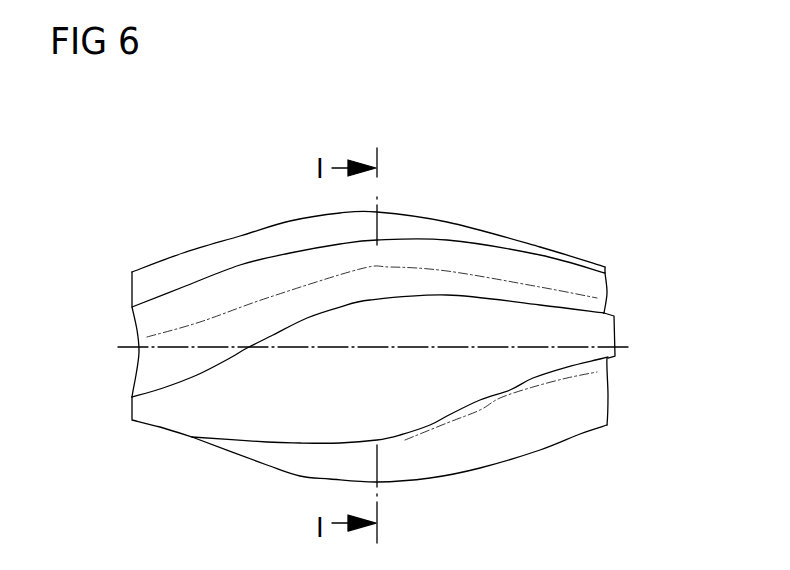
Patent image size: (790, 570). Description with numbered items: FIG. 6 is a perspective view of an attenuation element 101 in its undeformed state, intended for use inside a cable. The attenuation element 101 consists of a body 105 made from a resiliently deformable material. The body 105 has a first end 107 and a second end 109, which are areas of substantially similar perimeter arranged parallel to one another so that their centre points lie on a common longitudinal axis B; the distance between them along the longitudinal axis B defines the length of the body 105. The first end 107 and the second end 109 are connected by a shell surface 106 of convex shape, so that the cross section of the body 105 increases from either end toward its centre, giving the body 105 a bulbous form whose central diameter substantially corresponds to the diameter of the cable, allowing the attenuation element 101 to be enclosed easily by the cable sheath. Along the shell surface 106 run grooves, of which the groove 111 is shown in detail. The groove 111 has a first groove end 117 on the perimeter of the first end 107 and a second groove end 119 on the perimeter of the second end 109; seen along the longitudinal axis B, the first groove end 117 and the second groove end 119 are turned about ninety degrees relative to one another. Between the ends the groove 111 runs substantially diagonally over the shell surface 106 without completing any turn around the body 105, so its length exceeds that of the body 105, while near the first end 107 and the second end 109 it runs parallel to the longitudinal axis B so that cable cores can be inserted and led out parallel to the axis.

The attenuation element 101 is at (177, 155).
The body 105 is at (510, 172).
The shell surface 106 is at (242, 237).
The first end 107 is at (131, 290).
The second end 109 is at (617, 331).
The groove 111 is at (190, 357).
The first groove end 117 is at (135, 362).
The second groove end 119 is at (606, 285).
The longitudinal axis B is at (623, 355).